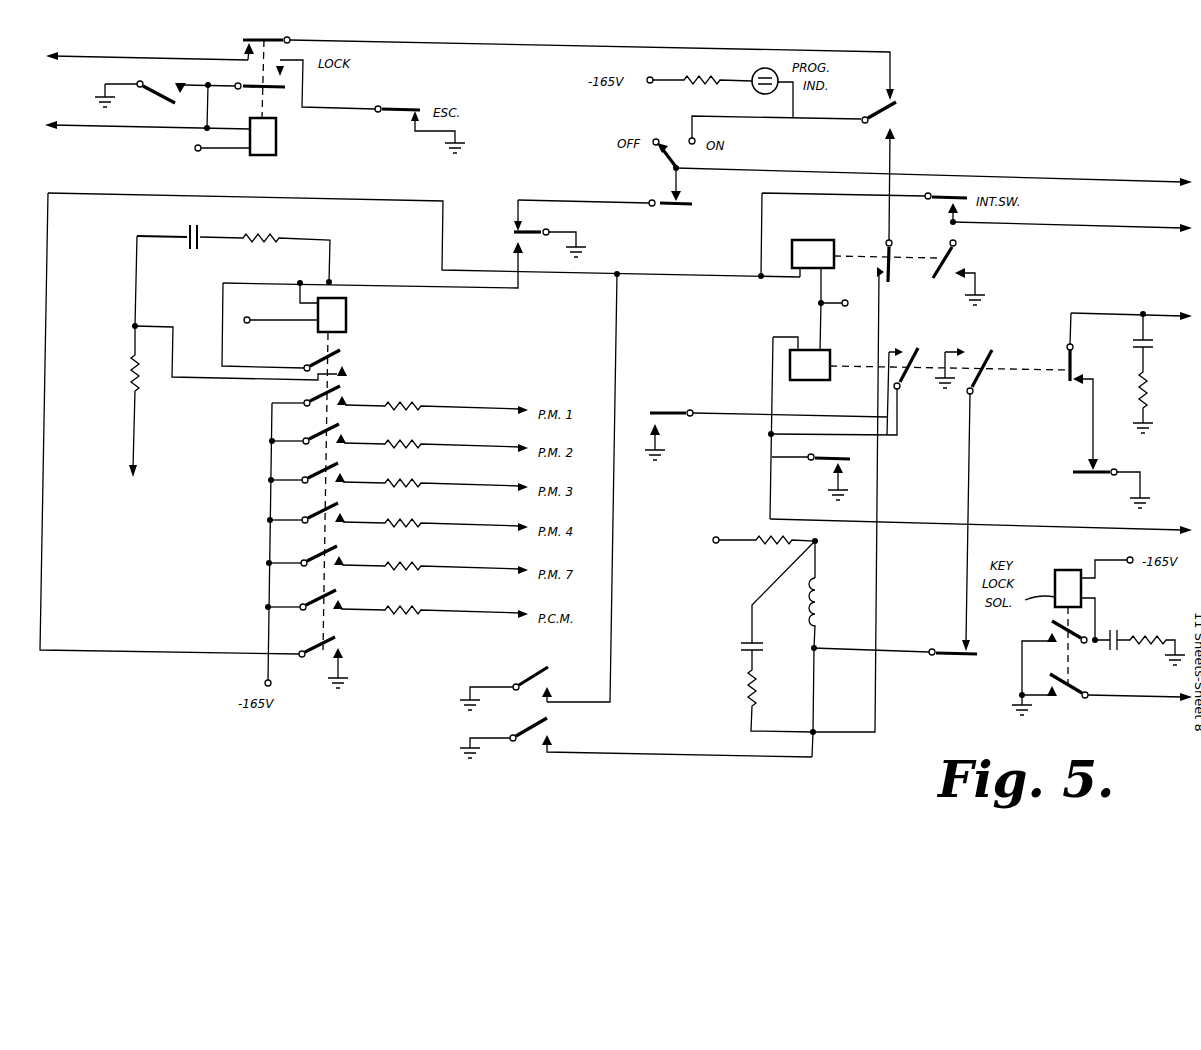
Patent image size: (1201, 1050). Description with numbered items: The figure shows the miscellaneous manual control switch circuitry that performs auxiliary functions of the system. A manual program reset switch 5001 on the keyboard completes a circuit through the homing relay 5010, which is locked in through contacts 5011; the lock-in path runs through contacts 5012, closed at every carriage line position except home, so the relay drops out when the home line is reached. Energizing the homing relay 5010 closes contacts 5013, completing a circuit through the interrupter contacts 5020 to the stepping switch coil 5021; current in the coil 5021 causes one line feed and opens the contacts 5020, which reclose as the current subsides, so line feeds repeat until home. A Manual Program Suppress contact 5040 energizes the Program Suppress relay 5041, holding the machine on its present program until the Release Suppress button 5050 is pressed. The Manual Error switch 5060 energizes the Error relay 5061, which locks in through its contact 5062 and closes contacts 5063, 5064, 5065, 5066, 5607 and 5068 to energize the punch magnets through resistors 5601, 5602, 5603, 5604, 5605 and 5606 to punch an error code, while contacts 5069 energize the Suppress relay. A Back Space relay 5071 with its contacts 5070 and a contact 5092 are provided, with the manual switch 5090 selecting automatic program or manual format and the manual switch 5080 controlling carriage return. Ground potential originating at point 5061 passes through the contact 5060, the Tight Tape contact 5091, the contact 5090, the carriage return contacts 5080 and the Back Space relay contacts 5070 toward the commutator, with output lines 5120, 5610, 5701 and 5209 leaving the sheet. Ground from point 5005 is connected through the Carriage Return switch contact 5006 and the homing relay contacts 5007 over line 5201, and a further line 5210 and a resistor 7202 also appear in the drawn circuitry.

The output line 5120 is at (164, 56).
The Back Space relay contacts 5070 is at (268, 35).
The switch contact 5092 is at (173, 114).
The output line 5610 is at (118, 131).
The Back Space relay 5071 is at (278, 138).
The carriage return control contacts 5080 is at (893, 112).
The automatic/manual program switch 5090 is at (667, 162).
The output line 5701 is at (1082, 182).
The Tight Tape contact 5091 is at (686, 198).
The Manual Error switch 5060 is at (514, 232).
The Error relay 5061 is at (582, 243).
The resistor 7202 is at (140, 422).
The Error relay lock-in contact 5062 is at (343, 360).
The Error relay contact 5063 is at (343, 388).
The Error relay contact 5064 is at (342, 426).
The Error relay contact 5065 is at (341, 465).
The Error relay contact 5066 is at (341, 505).
The relay contact 5607 is at (340, 548).
The Error relay contact 5068 is at (339, 592).
The Error relay contact 5069 is at (343, 642).
The resistor / key lock contact 5601 is at (489, 406).
The resistor 5602 is at (489, 444).
The resistor 5603 is at (489, 483).
The resistor 5604 is at (489, 523).
The resistor 5605 is at (489, 566).
The resistor 5606 is at (489, 610).
The Manual Program Suppress contact 5040 is at (540, 672).
The Release Suppress button 5050 is at (550, 724).
The Program Suppress relay 5041 is at (813, 240).
The homing relay 5010 is at (822, 382).
The output line 5209 is at (1078, 221).
The lock-in contacts 5012 is at (663, 407).
The homing relay lock-in contacts 5011 is at (920, 352).
The homing relay contacts 5013 is at (987, 347).
The interrupter contacts 5020 is at (948, 649).
The manual program reset switch 5001 is at (822, 462).
The output line 5210 is at (1032, 512).
The stepping switch coil 5021 is at (820, 600).
The homing relay contacts 5007 is at (1068, 382).
The line 5201 is at (1119, 314).
The Carriage Return switch contact 5006 is at (1080, 470).
The ground potential point 5005 is at (1150, 497).